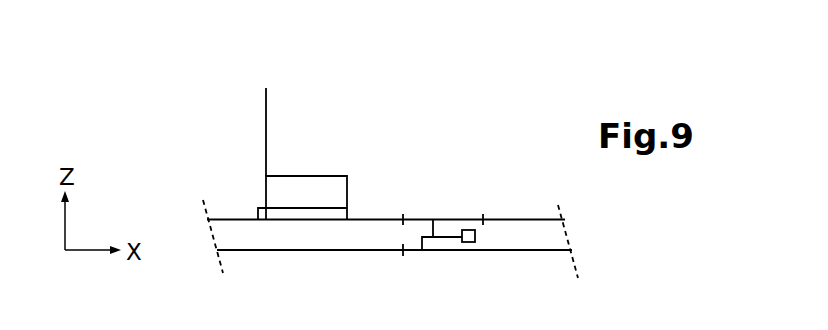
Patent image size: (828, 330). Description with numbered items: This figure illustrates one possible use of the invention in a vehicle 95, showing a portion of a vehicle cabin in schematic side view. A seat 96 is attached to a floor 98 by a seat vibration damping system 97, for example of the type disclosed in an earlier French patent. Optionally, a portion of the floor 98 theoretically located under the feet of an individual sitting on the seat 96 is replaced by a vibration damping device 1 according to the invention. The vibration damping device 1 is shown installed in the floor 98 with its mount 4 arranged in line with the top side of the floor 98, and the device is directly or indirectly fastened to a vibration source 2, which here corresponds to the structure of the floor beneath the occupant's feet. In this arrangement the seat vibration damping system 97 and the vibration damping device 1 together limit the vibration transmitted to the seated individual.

The vehicle 95 is at (485, 103).
The seat 96 is at (266, 123).
The seat vibration damping system 97 is at (348, 213).
The floor 98 is at (268, 243).
The mount 4 is at (450, 219).
The vibration damping device 1 is at (472, 219).
The vibration source 2 is at (440, 252).